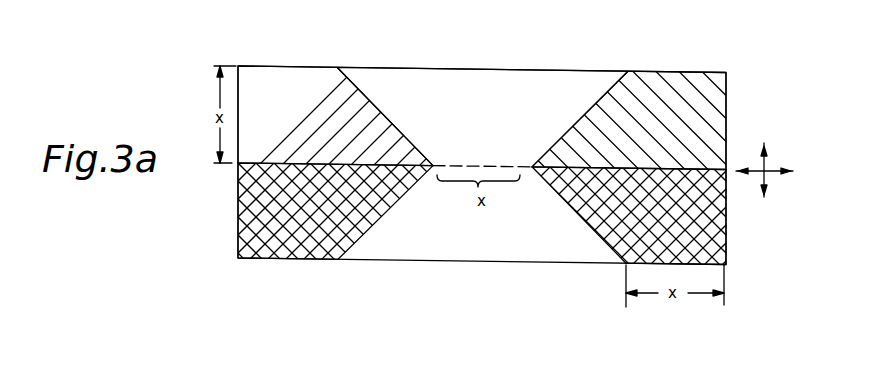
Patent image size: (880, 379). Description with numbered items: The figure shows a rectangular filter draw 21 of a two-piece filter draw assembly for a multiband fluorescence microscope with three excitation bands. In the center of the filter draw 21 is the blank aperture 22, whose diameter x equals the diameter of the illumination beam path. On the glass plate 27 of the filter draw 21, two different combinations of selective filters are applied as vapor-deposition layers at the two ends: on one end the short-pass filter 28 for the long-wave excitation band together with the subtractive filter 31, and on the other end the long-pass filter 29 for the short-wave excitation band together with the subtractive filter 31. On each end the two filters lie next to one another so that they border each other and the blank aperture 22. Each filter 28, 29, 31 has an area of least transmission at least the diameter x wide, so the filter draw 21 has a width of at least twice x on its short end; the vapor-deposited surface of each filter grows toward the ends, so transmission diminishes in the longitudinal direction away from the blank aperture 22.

The filter draw 21 is at (196, 55).
The blank aperture 22 is at (467, 173).
The glass plate 27 is at (490, 95).
The short-pass filter 28 is at (245, 90).
The long-pass filter 29 is at (702, 113).
The subtractive filter 31 is at (253, 222).